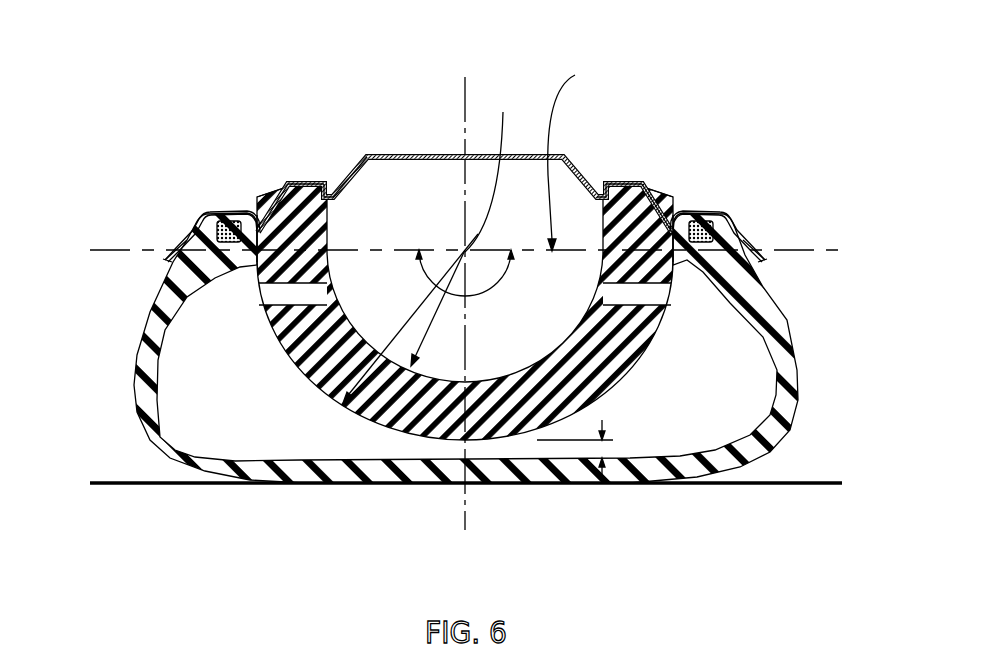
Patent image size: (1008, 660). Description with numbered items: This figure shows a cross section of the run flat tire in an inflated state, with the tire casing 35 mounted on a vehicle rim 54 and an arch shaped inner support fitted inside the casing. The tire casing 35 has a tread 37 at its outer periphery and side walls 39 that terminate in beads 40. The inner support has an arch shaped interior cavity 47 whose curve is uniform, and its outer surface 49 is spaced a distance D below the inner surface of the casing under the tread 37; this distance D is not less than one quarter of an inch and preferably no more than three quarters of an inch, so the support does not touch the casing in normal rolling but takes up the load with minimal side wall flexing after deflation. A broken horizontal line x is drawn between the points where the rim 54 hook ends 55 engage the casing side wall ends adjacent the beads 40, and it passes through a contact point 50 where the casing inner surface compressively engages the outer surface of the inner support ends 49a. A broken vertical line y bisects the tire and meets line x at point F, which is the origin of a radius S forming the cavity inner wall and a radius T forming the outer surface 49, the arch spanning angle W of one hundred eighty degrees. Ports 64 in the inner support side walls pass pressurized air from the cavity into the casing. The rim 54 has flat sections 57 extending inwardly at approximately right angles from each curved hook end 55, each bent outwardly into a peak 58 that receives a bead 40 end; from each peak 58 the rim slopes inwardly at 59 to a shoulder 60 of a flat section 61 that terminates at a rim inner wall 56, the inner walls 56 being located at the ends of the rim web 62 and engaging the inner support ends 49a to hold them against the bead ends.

The tire casing 35 is at (493, 348).
The tread 37 is at (537, 485).
The side walls 39 is at (133, 383).
The beads 40 is at (213, 213).
The arch shaped interior cavity 47 is at (573, 153).
The inner support outer surface 49 is at (468, 264).
The inner support ends 49a is at (293, 188).
The contact point 50 is at (250, 218).
The rim 54 is at (468, 140).
The hook ends 55 is at (463, 187).
The rim inner walls 56 is at (333, 187).
The flat sections 57 is at (217, 213).
The peak 58 is at (227, 212).
The inward slope 59 is at (267, 220).
The shoulder 60 is at (280, 192).
The flat section 61 is at (308, 180).
The rim web 62 is at (397, 150).
The ports 64 is at (267, 297).
The point F is at (488, 170).
The radius T is at (407, 320).
The radius S is at (423, 340).
The angle W is at (493, 302).
The distance D is at (605, 445).
The horizontal line X x is at (800, 250).
The vertical line Y y is at (480, 77).